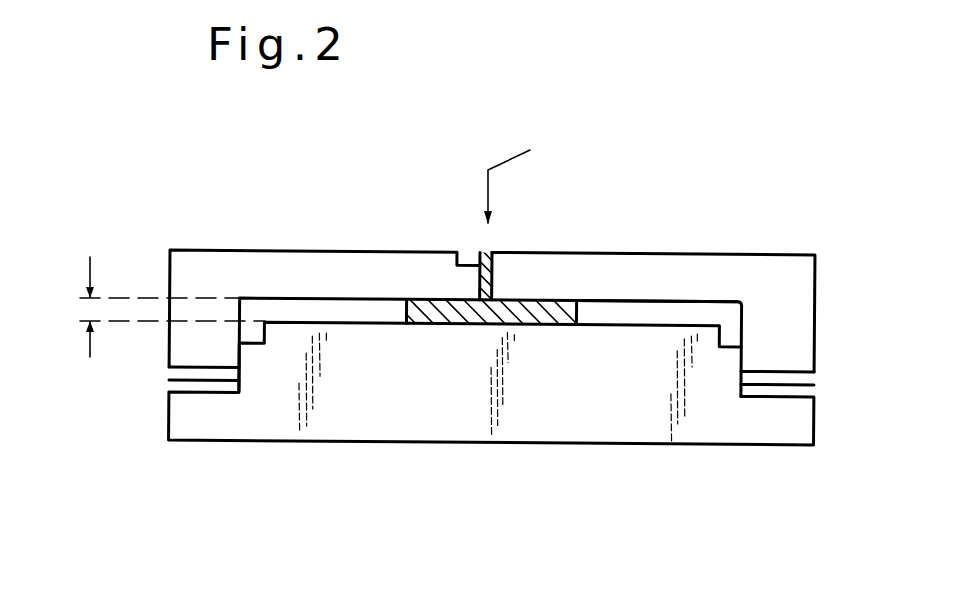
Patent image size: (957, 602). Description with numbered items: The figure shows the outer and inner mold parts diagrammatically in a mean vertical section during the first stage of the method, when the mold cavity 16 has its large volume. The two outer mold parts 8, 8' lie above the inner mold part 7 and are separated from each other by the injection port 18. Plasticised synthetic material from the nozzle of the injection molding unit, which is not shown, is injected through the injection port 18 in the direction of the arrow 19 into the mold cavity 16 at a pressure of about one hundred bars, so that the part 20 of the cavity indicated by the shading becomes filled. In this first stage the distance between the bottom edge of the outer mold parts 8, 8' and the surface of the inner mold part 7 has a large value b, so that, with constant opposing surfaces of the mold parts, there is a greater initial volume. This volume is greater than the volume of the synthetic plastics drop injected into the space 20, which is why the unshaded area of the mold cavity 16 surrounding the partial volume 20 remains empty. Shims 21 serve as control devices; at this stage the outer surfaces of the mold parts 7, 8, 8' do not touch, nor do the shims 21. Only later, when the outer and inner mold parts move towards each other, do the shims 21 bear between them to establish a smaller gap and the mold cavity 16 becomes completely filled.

The inner mold part 7 is at (603, 400).
The outer mold part 8 is at (324, 287).
The outer mold part 8' is at (653, 287).
The mold cavity 16 is at (688, 302).
The injection port 18 is at (458, 255).
The arrow 19 is at (522, 173).
The part of the cavity 20 is at (437, 318).
The shims 21 is at (180, 385).
The distance b is at (90, 307).